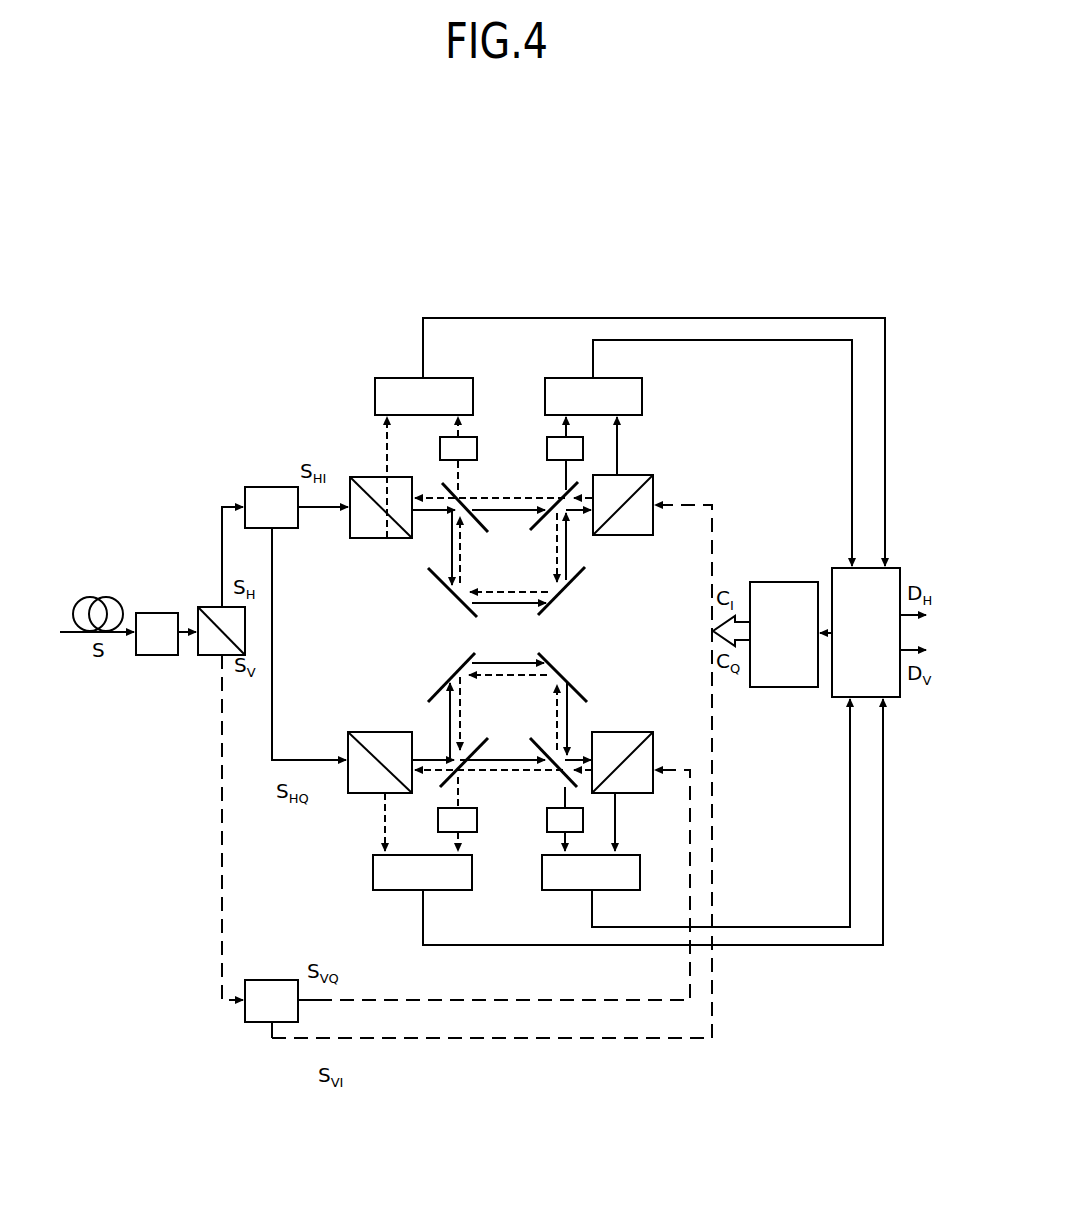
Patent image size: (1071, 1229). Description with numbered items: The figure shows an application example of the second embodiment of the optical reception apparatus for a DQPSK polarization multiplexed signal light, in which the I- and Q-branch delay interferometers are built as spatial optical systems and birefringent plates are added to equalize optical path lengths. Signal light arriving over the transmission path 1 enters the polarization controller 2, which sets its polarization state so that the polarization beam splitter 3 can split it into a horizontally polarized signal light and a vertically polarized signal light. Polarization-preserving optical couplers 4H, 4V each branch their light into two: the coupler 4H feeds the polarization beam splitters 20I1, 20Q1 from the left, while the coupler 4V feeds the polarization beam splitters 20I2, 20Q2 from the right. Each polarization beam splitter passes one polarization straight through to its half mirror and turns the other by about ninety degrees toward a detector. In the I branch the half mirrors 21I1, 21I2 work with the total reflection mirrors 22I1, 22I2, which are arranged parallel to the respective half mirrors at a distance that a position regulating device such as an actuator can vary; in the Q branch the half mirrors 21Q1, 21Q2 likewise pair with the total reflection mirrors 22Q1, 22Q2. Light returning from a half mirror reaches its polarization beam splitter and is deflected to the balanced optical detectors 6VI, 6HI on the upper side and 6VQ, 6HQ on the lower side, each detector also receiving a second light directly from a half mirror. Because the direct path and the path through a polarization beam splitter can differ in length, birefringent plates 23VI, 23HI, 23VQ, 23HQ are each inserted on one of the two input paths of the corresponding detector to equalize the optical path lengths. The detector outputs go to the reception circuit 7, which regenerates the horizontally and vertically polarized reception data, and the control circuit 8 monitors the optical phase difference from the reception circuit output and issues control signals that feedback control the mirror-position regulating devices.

The transmission path 1 is at (95, 597).
The polarization controller 2 is at (152, 613).
The polarization beam splitter 3 is at (206, 607).
The optical coupler 4H is at (258, 487).
The optical coupler 4V is at (256, 1022).
The polarization beam splitter 20I1 is at (362, 477).
The polarization beam splitter 20I2 is at (640, 475).
The polarization beam splitter 20Q1 is at (362, 732).
The polarization beam splitter 20Q2 is at (640, 732).
The half mirror 21I1 is at (462, 499).
The half mirror 21I2 is at (556, 499).
The half mirror 21Q1 is at (457, 772).
The half mirror 21Q2 is at (556, 772).
The total reflection mirror 22I1 is at (448, 593).
The total reflection mirror 22I2 is at (565, 593).
The total reflection mirror 22Q1 is at (453, 672).
The total reflection mirror 22Q2 is at (562, 672).
The birefringent plate 23VI is at (478, 444).
The birefringent plate 23HI is at (547, 446).
The birefringent plate 23VQ is at (477, 823).
The birefringent plate 23HQ is at (547, 826).
The balanced optical detector 6VI is at (394, 378).
The balanced optical detector 6HI is at (564, 378).
The balanced optical detector 6VQ is at (392, 890).
The balanced optical detector 6HQ is at (561, 890).
The reception circuit 7 is at (895, 568).
The control circuit 8 is at (788, 582).